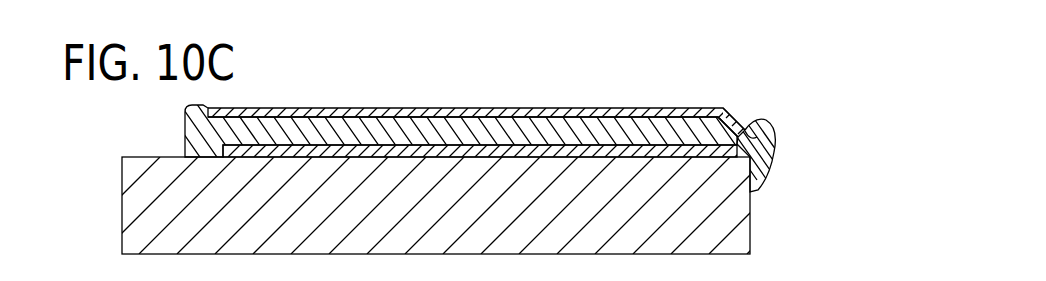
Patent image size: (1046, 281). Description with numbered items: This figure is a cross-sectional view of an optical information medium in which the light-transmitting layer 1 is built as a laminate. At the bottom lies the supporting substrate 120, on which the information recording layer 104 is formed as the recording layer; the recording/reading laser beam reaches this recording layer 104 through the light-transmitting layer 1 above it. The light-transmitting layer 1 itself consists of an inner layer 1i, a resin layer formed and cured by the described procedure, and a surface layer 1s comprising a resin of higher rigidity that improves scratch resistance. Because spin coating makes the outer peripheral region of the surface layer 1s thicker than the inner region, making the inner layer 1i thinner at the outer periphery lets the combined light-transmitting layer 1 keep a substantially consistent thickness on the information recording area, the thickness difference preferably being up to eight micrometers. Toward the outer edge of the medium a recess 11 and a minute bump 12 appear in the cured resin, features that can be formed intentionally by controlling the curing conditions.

The light-transmitting layer 1 is at (461, 81).
The surface layer 1s is at (617, 44).
The inner layer 1i is at (607, 125).
The information recording layer 104 is at (481, 150).
The recess 11 is at (748, 124).
The minute bump 12 is at (774, 130).
The supporting substrate 120 is at (745, 223).